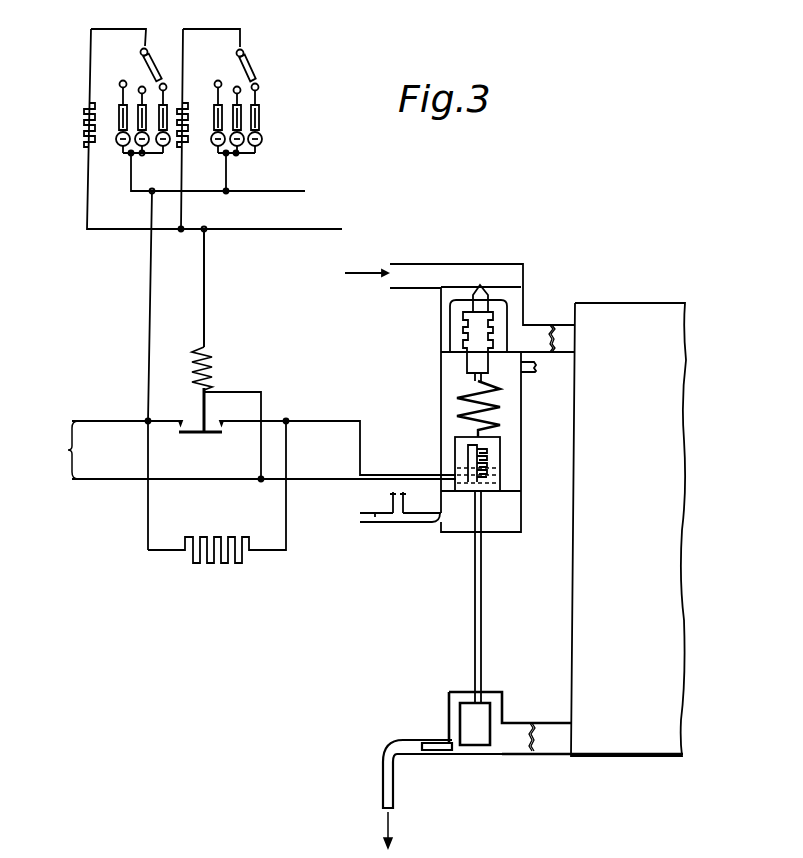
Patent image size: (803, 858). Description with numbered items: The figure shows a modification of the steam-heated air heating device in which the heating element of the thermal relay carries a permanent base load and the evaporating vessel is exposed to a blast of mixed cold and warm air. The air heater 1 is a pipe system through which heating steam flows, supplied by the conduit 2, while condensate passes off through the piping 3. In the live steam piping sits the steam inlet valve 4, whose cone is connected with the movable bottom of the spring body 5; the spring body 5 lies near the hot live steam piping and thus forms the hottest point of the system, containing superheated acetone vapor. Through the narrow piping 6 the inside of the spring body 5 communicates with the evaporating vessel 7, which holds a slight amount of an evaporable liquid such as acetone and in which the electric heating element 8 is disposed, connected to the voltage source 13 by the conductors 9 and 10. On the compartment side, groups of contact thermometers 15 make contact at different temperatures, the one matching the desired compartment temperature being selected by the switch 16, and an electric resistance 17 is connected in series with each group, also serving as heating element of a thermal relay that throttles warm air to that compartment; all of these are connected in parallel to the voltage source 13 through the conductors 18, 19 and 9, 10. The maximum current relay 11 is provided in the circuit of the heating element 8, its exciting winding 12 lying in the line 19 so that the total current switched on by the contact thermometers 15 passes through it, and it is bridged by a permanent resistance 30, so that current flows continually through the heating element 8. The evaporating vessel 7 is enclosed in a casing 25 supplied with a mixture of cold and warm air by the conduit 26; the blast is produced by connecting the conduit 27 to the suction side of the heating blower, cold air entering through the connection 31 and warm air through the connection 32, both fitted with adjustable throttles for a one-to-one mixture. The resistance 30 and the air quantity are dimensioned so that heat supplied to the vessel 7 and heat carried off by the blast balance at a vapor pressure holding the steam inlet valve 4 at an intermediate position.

The air heater 1 is at (620, 320).
The conduit 2 is at (400, 270).
The condensate piping 3 is at (390, 775).
The steam inlet valve 4 is at (480, 290).
The spring body 5 is at (493, 325).
The narrow piping 6 is at (505, 410).
The evaporating vessel 7 is at (502, 458).
The electric heating element 8 is at (483, 462).
The conductor 9 is at (98, 421).
The conductor 10 is at (101, 479).
The maximum current relay 11 is at (214, 437).
The exciting winding 12 is at (212, 370).
The voltage source 13 is at (57, 450).
The contact thermometers 15 is at (256, 117).
The switch 16 is at (153, 67).
The electric resistance 17 is at (85, 123).
The conductor 18 is at (152, 289).
The conductor 19 is at (205, 293).
The casing 25 is at (520, 521).
The conduit 26 is at (426, 517).
The conduit 27 is at (535, 375).
The permanent resistance 30 is at (222, 563).
The connection 31 is at (382, 517).
The connection 32 is at (393, 503).